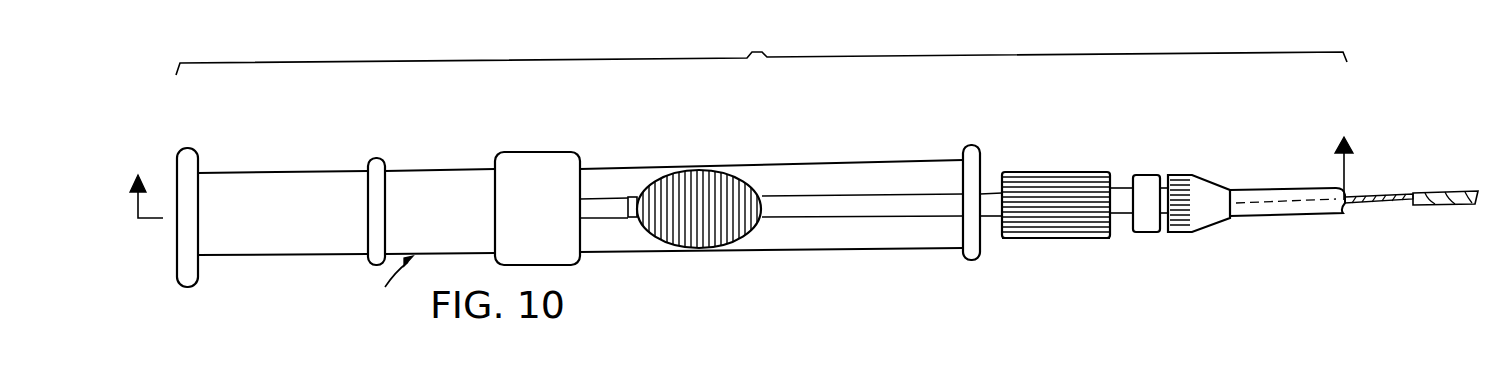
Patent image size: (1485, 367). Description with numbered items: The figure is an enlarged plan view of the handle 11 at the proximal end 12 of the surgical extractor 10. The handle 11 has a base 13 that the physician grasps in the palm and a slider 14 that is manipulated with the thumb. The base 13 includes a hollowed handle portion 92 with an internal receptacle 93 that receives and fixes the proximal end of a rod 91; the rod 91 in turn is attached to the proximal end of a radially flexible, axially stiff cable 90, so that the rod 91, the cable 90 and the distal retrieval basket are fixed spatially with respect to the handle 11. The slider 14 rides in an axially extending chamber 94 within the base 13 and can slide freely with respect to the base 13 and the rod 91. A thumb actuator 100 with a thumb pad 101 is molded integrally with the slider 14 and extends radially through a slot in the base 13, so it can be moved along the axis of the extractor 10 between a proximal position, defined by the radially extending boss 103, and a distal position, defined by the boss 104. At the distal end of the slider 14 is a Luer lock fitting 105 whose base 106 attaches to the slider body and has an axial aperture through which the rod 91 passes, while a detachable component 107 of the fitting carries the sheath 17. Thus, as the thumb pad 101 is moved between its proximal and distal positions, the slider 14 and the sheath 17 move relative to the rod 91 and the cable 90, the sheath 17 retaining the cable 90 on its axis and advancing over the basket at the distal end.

The surgical extractor 10 is at (1118, 154).
The handle 11 is at (743, 208).
The proximal end 12 is at (761, 47).
The base 13 is at (333, 247).
The slider 14 is at (708, 247).
The sheath 17 is at (1293, 215).
The cable 90 is at (1440, 192).
The rod 91 is at (635, 218).
The hollowed handle portion 92 is at (412, 168).
The receptacle 93 is at (608, 215).
The chamber 94 is at (633, 200).
The thumb actuator 100 is at (752, 156).
The thumb pad 101 is at (690, 177).
The boss 103 is at (550, 152).
The boss 104 is at (963, 155).
The Luer lock fitting 105 is at (1052, 172).
The base 106 is at (1073, 238).
The detachable component 107 is at (1208, 176).